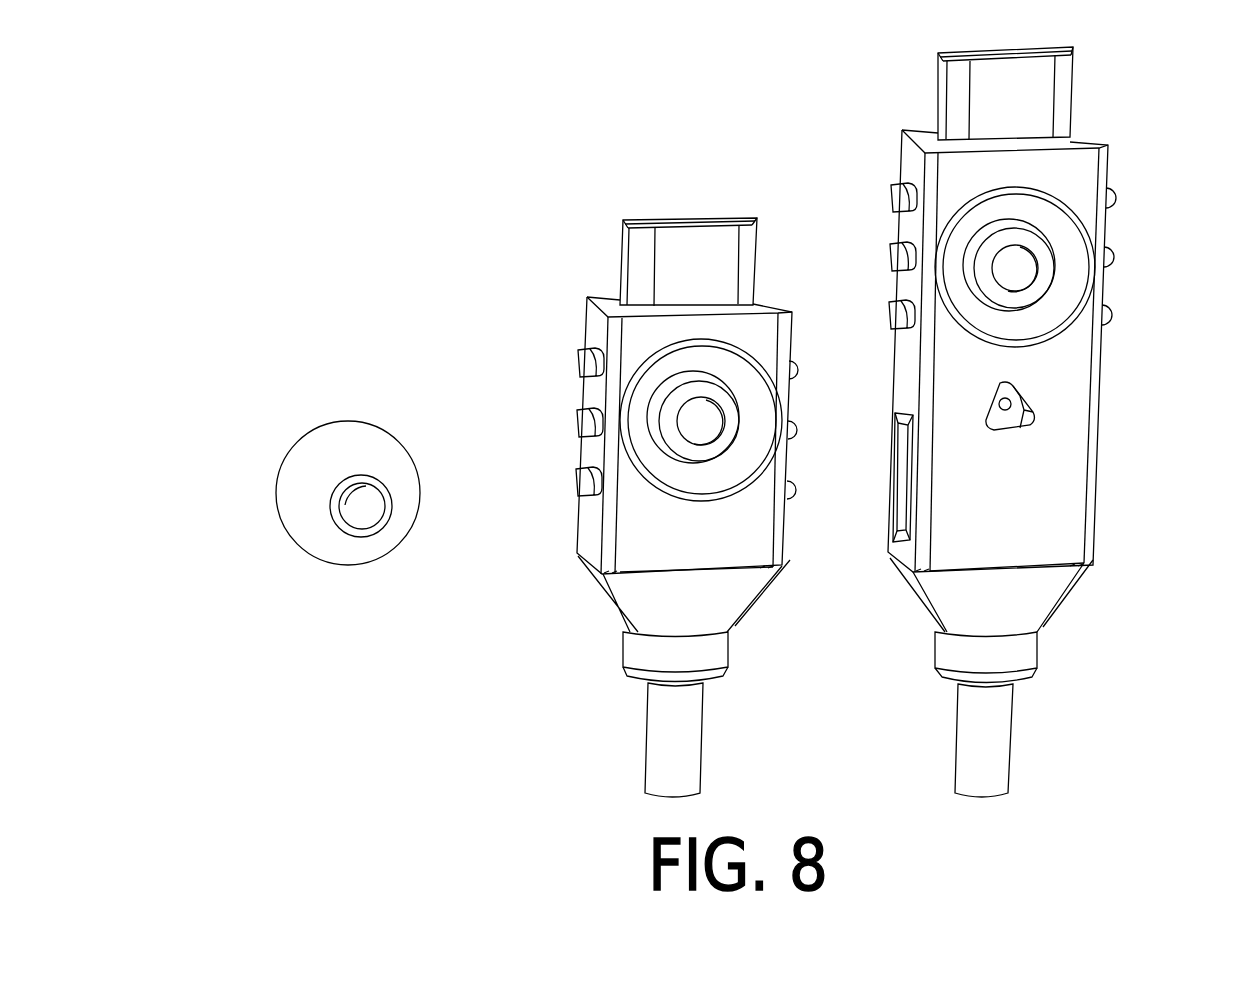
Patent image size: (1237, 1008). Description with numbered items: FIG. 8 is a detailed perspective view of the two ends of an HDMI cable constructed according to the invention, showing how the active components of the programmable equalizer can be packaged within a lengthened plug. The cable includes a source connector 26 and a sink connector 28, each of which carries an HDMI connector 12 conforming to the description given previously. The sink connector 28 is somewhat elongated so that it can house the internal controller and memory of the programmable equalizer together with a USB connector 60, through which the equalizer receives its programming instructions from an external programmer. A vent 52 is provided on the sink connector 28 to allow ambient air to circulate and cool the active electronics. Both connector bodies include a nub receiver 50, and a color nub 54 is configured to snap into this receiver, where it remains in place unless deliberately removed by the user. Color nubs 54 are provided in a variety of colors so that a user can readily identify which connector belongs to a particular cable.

The HDMI connector 12 is at (667, 218).
The source connector 26 is at (598, 327).
The sink connector 28 is at (1085, 195).
The nub receiver 50 is at (735, 452).
The vent 52 is at (1030, 427).
The color nub 54 is at (318, 527).
The USB connector 60 is at (893, 557).